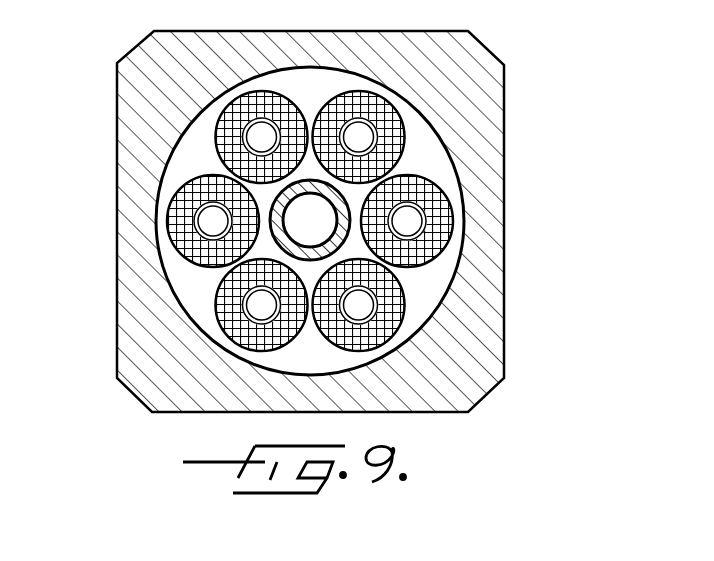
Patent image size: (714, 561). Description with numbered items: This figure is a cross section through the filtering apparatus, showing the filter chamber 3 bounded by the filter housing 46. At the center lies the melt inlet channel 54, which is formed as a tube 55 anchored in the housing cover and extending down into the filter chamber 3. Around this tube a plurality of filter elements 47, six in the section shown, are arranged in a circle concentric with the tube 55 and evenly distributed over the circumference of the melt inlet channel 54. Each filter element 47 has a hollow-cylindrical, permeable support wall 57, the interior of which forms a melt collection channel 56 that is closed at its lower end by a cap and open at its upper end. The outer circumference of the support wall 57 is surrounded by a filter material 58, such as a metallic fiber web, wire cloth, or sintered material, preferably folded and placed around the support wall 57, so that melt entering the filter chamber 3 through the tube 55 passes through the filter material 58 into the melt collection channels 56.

The filter chamber 3 is at (427, 137).
The filter housing 46 is at (498, 157).
The filter element 47 is at (450, 203).
The melt inlet channel 54 is at (262, 198).
The tube 55 is at (300, 232).
The melt collection channel 56 is at (415, 222).
The support wall 57 is at (422, 238).
The filter material 58 is at (410, 257).